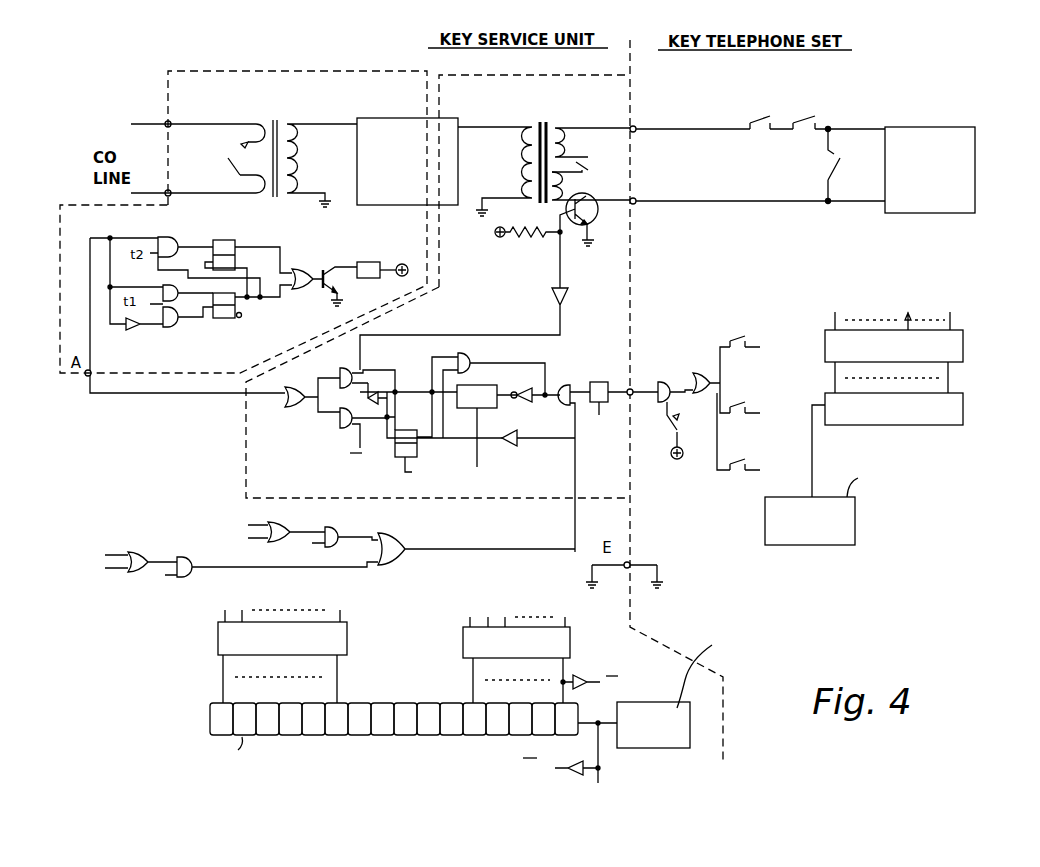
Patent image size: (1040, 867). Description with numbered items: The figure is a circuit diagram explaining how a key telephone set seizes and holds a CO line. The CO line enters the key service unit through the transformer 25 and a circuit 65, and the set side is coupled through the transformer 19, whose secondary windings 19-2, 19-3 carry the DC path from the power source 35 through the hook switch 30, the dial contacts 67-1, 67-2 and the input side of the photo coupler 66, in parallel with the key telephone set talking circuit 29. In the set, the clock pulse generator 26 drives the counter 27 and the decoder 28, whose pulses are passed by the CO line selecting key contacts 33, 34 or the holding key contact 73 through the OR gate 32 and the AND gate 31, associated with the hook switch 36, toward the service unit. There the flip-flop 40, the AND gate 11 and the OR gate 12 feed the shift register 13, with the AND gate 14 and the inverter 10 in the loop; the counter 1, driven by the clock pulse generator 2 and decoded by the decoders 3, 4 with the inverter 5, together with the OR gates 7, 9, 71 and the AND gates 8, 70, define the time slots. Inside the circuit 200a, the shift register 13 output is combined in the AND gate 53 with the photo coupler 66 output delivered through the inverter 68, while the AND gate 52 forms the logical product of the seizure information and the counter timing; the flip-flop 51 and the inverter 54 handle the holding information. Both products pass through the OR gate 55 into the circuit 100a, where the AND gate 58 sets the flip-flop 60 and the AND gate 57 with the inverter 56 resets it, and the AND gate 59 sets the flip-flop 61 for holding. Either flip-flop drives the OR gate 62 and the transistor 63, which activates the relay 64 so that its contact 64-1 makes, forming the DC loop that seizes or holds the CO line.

The counter 1 is at (380, 737).
The clock pulse generator 2 is at (657, 750).
The decoder 3 is at (529, 651).
The decoder 4 is at (293, 647).
The inverter 5 is at (585, 676).
The OR gate 7 is at (278, 523).
The AND gate 8 is at (336, 528).
The OR gate 9 is at (403, 540).
The inverter 10 is at (511, 446).
The AND gate 11 is at (563, 384).
The OR gate 12 is at (522, 388).
The shift register 13 is at (470, 409).
The AND gate 14 is at (472, 358).
The transformer 19 is at (540, 122).
The secondary winding 19-2 is at (560, 130).
The secondary winding 19-3 is at (573, 197).
The transformer 25 is at (286, 119).
The clock pulse generator 26 is at (855, 523).
The counter 27 is at (963, 409).
The decoder 28 is at (963, 347).
The key telephone set talking circuit 29 is at (942, 127).
The hook switch 30 is at (760, 118).
The AND gate 31 is at (660, 383).
The OR gate 32 is at (698, 373).
The contact of CO line selecting key 33 is at (742, 335).
The contact of CO line selecting key 34 is at (744, 418).
The power source 35 is at (588, 164).
The hook switch 36 is at (661, 430).
The flip-flop circuit 40 is at (600, 382).
The flip-flop circuit 51 is at (409, 430).
The AND gate 52 is at (338, 427).
The AND gate 53 is at (344, 370).
The inverter 54 is at (374, 406).
The OR gate 55 is at (286, 403).
The inverter 56 is at (131, 330).
The AND gate 57 is at (172, 327).
The AND gate 58 is at (182, 322).
The AND gate 59 is at (175, 238).
The flip-flop circuit 60 is at (249, 316).
The flip-flop circuit 61 is at (229, 238).
The OR gate 62 is at (296, 290).
The transistor 63 is at (328, 268).
The relay 64 is at (369, 262).
The contact of the relay 64-1 is at (230, 160).
The circuit 65 is at (392, 118).
The photo coupler 66 is at (596, 223).
The dial contact 67-1 is at (808, 120).
The dial contact 67-2 is at (825, 169).
The inverter 68 is at (482, 298).
The AND gate 70 is at (185, 557).
The OR gate 71 is at (138, 552).
The contact of holding key 73 is at (736, 478).
The circuit 100a is at (320, 71).
The circuit 200a is at (403, 286).